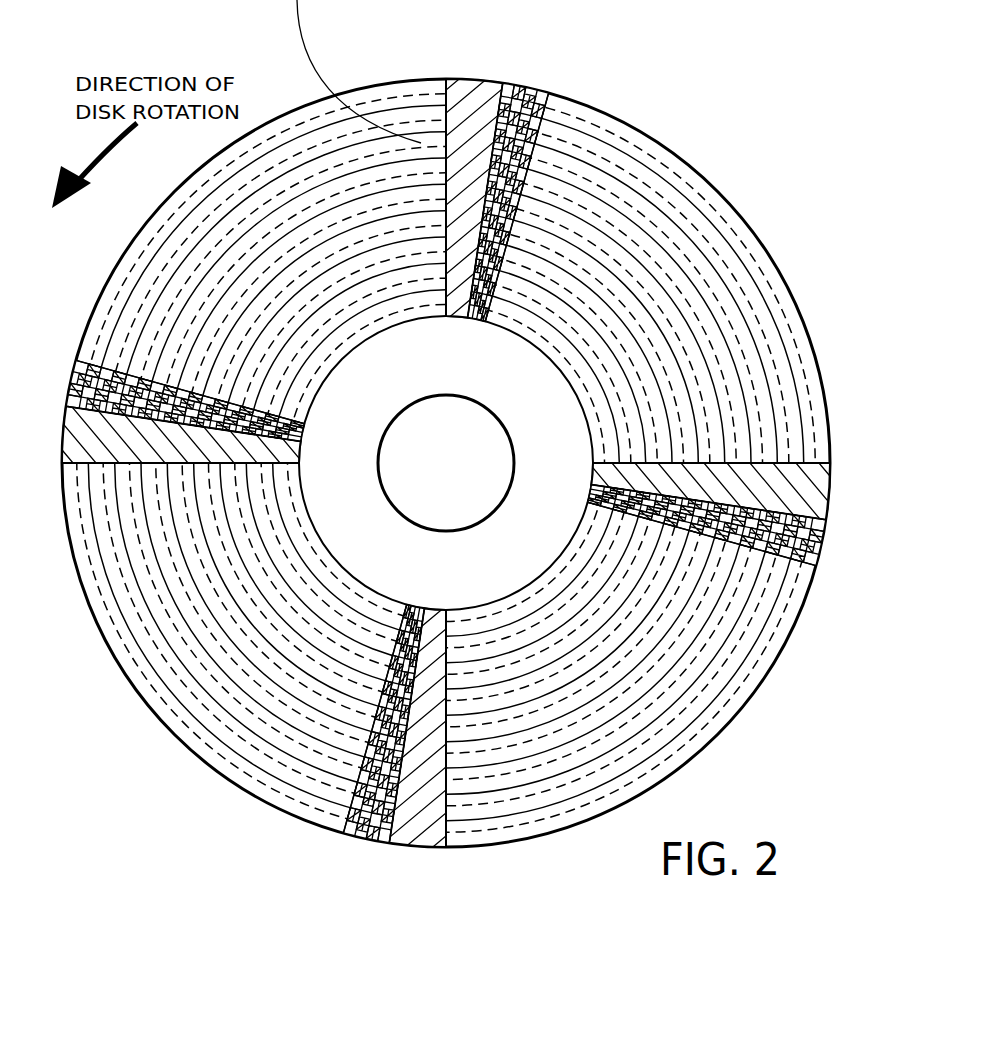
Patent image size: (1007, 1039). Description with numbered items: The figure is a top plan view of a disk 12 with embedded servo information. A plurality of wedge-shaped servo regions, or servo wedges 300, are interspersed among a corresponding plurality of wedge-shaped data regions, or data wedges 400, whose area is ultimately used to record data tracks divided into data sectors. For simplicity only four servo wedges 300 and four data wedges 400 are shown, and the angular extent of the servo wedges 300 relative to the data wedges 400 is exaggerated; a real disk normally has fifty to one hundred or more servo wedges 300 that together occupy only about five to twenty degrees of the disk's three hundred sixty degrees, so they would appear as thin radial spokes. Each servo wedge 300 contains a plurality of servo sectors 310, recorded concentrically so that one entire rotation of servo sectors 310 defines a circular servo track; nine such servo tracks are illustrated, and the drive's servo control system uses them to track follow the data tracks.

The disk 12 is at (786, 654).
The servo wedge 300 is at (507, 55).
The servo sector 310 is at (547, 167).
The data wedge 400 is at (663, 134).